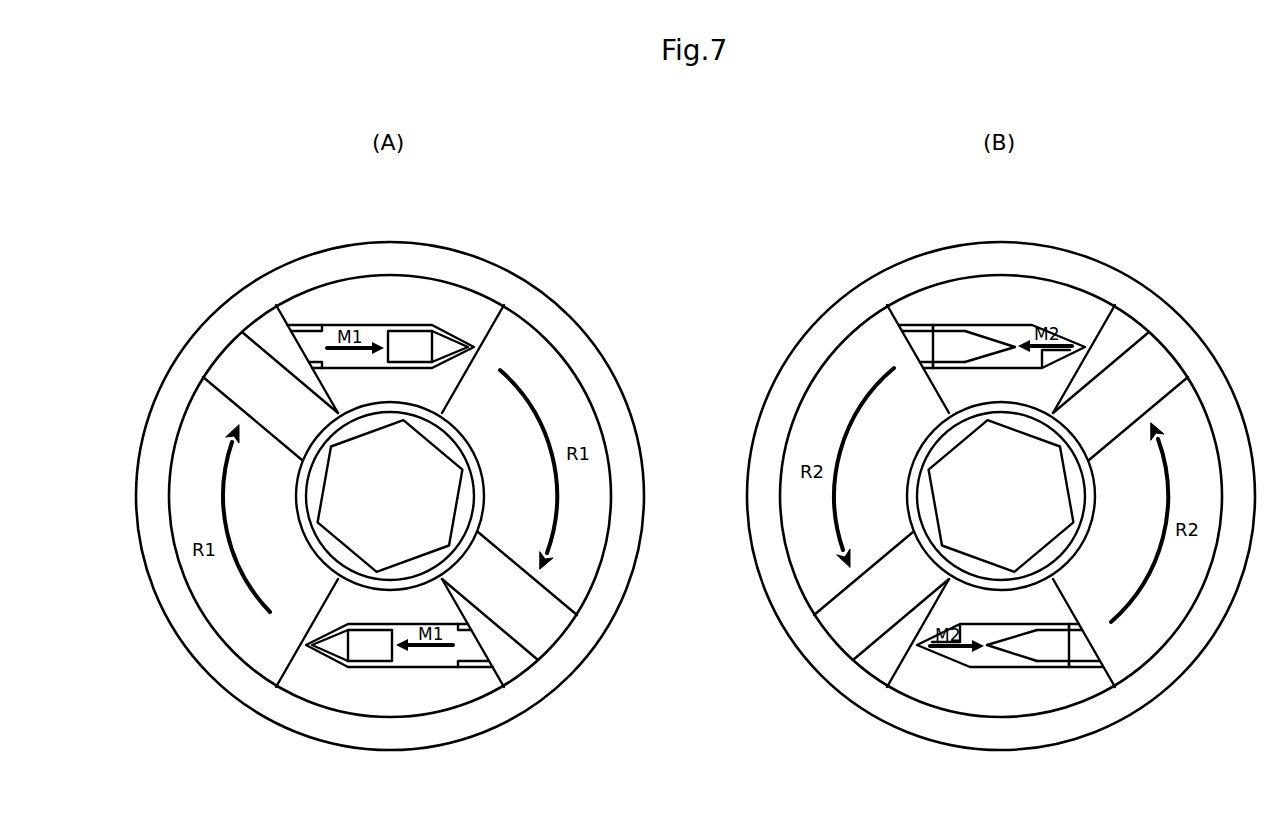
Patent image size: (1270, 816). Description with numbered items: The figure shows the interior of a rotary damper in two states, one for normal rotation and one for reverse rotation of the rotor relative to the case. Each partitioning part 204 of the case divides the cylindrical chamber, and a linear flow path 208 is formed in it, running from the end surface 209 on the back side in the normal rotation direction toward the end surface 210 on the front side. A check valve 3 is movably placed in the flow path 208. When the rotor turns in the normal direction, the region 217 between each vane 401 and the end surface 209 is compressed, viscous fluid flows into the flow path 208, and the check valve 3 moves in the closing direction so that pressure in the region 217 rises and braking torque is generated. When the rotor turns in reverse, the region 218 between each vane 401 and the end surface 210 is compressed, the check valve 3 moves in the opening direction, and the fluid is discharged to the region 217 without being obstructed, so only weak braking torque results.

The check valve 3 is at (445, 340).
The partitioning part 204 is at (417, 302).
The flow path 208 is at (378, 325).
The end surface on the back side in the normal rotation direction 209 is at (288, 324).
The end surface on the front side in the normal rotation direction 210 is at (500, 332).
The region 217 is at (263, 319).
The region 218 is at (569, 392).
The vane 401 is at (252, 385).